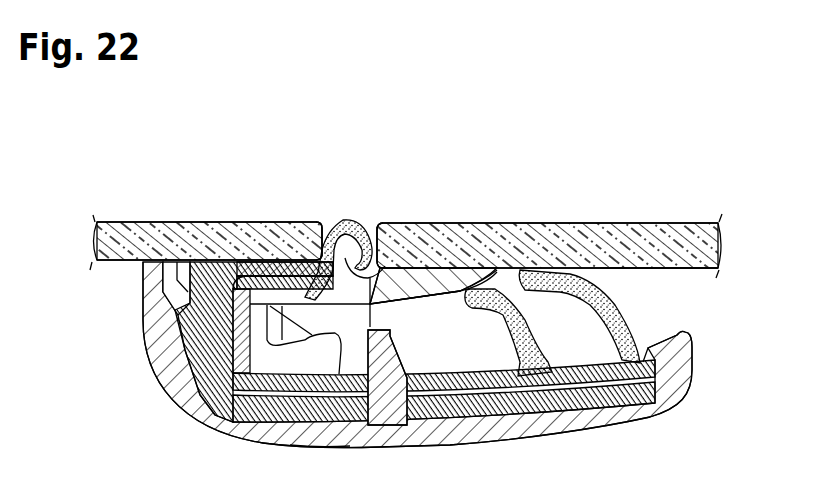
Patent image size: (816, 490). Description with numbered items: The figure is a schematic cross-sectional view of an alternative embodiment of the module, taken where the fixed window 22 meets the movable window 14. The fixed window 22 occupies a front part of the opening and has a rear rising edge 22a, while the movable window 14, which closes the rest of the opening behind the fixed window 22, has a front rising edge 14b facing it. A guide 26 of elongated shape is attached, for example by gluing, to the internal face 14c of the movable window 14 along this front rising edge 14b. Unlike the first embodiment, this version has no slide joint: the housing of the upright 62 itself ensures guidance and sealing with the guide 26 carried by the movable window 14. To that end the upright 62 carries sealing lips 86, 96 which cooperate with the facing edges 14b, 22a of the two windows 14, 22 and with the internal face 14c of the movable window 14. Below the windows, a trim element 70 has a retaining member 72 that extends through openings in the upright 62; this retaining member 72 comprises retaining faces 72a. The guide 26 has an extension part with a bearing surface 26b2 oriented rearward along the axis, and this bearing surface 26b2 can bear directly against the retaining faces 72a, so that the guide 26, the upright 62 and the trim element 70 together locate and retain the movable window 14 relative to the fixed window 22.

The movable window 14 is at (584, 222).
The front rising edge 14b is at (369, 223).
The internal face 14c is at (672, 269).
The fixed window 22 is at (240, 221).
The rear rising edge 22a is at (326, 222).
The guide 26 is at (400, 289).
The bearing surface 26b2 is at (398, 350).
The upright 62 is at (560, 412).
The trim element 70 is at (672, 425).
The retaining member 72 is at (392, 380).
The retaining faces 72a is at (321, 418).
The sealing lip 86 is at (350, 221).
The sealing lip 96 is at (530, 314).